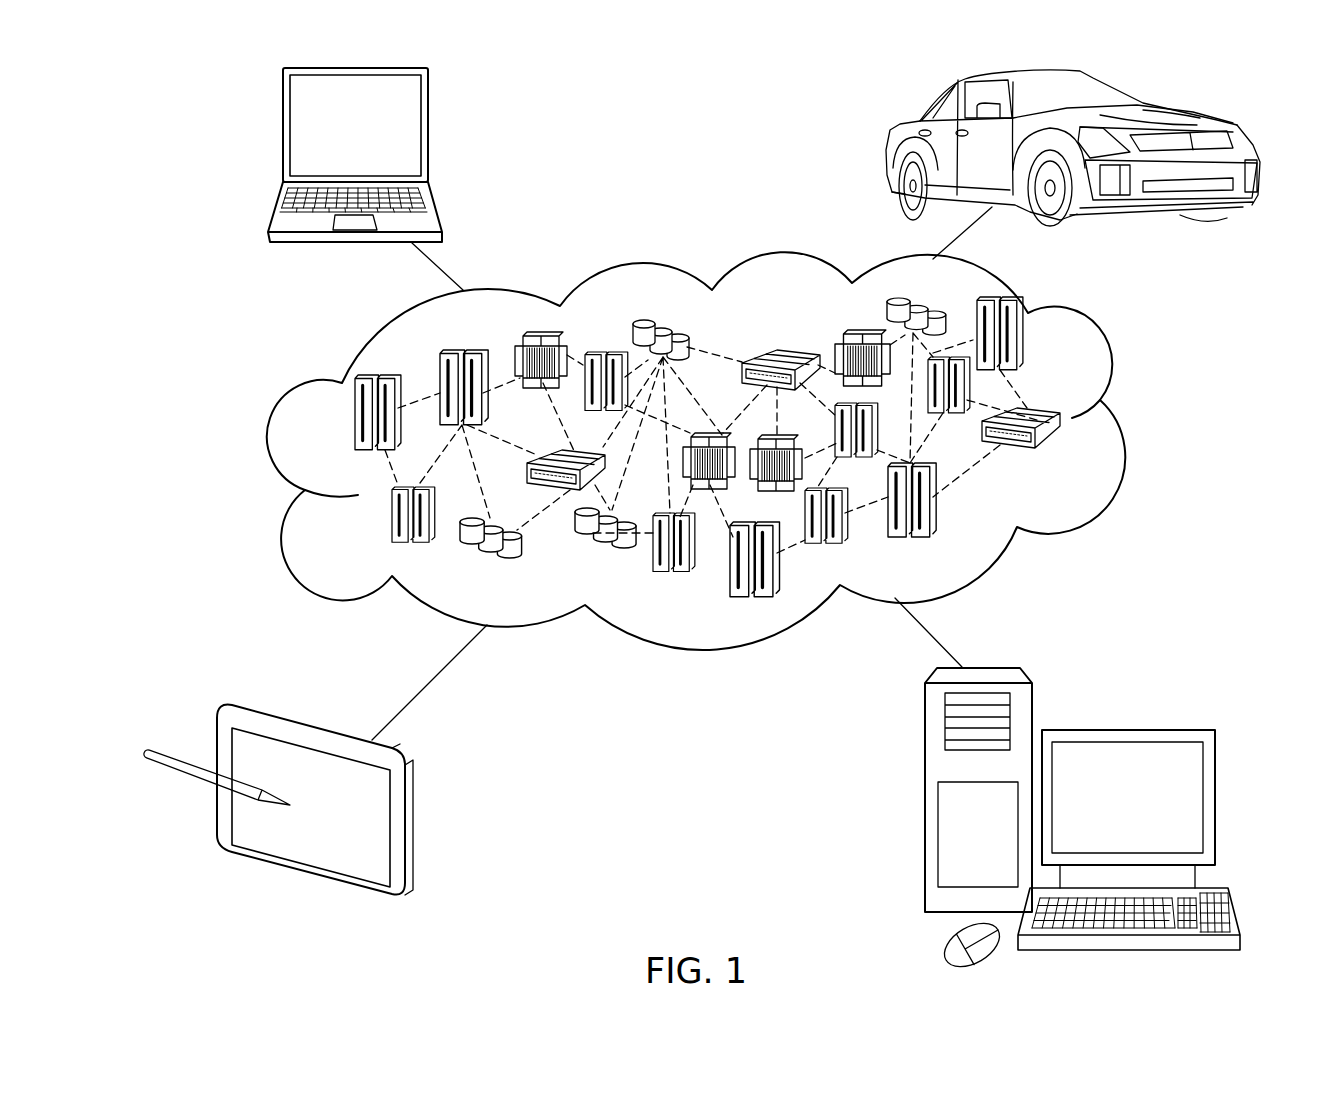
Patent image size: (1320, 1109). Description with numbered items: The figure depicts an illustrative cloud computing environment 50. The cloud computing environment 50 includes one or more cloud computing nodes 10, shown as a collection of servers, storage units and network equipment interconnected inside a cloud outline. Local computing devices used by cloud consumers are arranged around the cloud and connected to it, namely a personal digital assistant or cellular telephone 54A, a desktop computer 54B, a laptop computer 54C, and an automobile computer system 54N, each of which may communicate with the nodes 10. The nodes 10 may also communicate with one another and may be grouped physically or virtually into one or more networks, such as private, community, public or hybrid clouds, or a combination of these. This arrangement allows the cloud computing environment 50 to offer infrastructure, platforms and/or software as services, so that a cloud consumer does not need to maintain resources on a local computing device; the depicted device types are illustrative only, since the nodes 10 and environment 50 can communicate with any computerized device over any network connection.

The cloud computing node 10 is at (1061, 456).
The cloud computing environment 50 is at (727, 496).
The personal digital assistant (PDA) or cellular telephone 54A is at (417, 828).
The desktop computer 54B is at (1125, 729).
The laptop computer 54C is at (428, 133).
The automobile computer system 54N is at (891, 148).